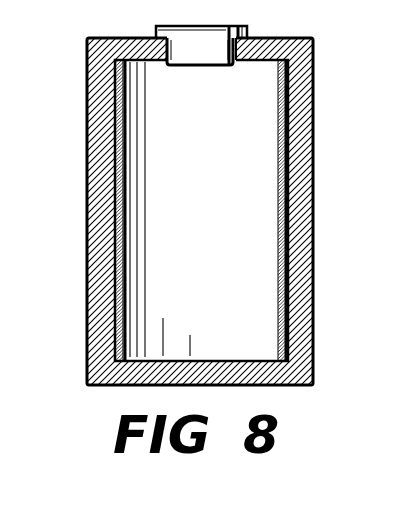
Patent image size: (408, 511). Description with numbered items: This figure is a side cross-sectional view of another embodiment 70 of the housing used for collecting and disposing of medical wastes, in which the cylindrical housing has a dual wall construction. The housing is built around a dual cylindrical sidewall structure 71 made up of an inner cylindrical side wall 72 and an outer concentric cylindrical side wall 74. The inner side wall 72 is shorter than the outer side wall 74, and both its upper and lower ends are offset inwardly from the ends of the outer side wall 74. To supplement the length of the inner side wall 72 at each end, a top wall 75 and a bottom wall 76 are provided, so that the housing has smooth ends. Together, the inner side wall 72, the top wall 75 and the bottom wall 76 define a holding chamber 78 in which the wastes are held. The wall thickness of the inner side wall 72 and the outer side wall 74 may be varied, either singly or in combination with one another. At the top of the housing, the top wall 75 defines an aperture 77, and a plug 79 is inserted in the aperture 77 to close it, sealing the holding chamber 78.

The housing embodiment 70 is at (79, 353).
The dual cylindrical sidewall structure 71 is at (87, 210).
The inner cylindrical side wall 72 is at (127, 268).
The outer concentric cylindrical side wall 74 is at (87, 272).
The top wall 75 is at (118, 38).
The bottom wall 76 is at (270, 386).
The aperture 77 is at (168, 53).
The holding chamber 78 is at (222, 205).
The plug 79 is at (229, 26).